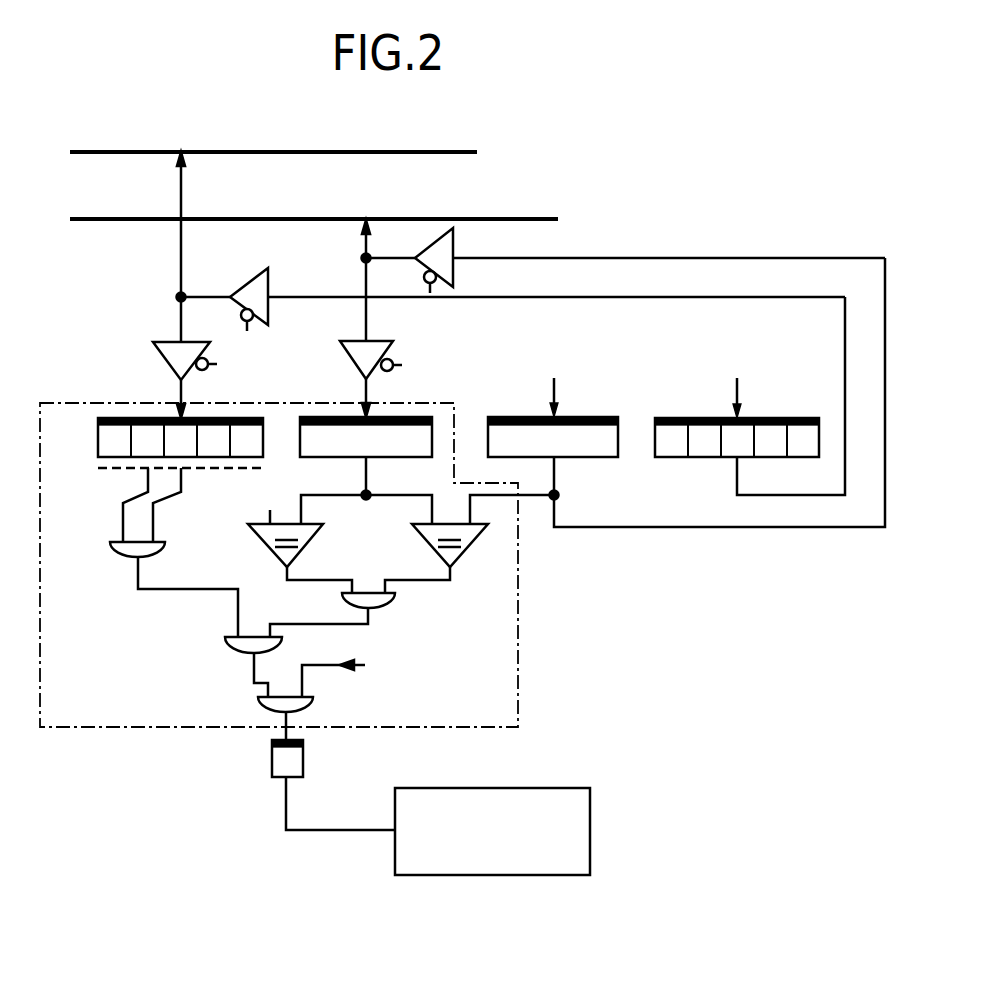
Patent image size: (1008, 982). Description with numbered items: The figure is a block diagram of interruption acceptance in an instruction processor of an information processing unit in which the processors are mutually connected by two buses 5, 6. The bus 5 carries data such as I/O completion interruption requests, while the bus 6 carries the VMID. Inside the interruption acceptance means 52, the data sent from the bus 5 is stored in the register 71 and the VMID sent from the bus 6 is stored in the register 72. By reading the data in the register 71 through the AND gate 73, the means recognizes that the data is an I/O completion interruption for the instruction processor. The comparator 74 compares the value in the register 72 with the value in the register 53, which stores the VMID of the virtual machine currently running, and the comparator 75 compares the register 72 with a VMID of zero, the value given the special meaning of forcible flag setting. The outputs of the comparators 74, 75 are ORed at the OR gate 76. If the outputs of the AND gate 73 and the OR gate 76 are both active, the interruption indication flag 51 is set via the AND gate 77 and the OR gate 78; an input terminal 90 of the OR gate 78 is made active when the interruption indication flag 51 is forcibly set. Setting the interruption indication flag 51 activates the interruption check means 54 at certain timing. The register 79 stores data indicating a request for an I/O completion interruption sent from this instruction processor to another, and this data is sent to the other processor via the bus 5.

The bus 5 is at (125, 152).
The bus 6 is at (130, 219).
The register 71 is at (98, 437).
The register 72 is at (300, 437).
The register 53 is at (510, 417).
The register 79 is at (690, 418).
The AND gate 73 is at (115, 552).
The comparator 74 is at (425, 543).
The comparator 75 is at (255, 540).
The OR gate 76 is at (395, 610).
The AND gate 77 is at (228, 640).
The OR gate 78 is at (262, 710).
The input terminal 90 is at (353, 674).
The interruption acceptance means 52 is at (518, 612).
The interruption indication flag 51 is at (272, 766).
The interruption check means 54 is at (445, 788).